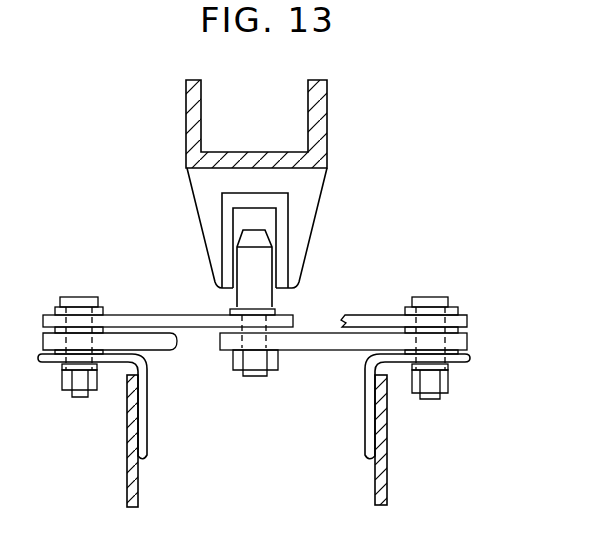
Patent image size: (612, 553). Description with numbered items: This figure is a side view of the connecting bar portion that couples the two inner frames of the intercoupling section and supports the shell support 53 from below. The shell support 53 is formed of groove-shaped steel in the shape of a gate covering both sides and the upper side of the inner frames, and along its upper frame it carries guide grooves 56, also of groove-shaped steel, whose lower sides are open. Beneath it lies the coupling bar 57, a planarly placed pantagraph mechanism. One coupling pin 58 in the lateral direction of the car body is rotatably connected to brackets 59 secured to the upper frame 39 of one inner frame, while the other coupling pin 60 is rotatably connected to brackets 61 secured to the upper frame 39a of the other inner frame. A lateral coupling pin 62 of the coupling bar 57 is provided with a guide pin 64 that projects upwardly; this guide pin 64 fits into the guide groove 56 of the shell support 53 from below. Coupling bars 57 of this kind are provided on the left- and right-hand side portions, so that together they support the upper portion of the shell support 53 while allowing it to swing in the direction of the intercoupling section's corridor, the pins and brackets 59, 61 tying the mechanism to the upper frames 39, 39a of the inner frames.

The shell support 53 is at (317, 157).
The guide groove 56 is at (288, 218).
The coupling bar 57 is at (193, 288).
The coupling pin 58 is at (445, 297).
The bracket 59 is at (370, 403).
The coupling pin 60 is at (80, 300).
The bracket 61 is at (143, 405).
The lateral coupling pin 62 is at (275, 312).
The guide pin 64 is at (263, 268).
The upper frame 39 is at (383, 483).
The upper frame 39a is at (128, 493).